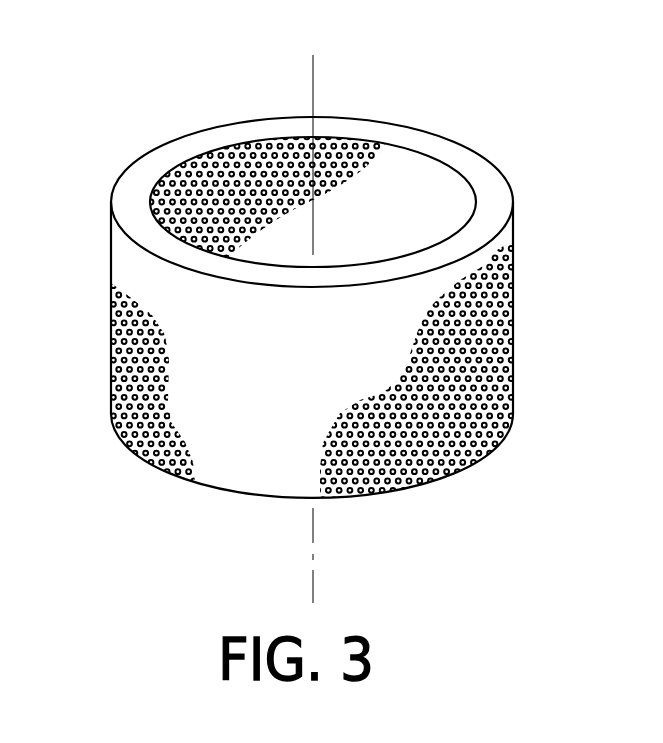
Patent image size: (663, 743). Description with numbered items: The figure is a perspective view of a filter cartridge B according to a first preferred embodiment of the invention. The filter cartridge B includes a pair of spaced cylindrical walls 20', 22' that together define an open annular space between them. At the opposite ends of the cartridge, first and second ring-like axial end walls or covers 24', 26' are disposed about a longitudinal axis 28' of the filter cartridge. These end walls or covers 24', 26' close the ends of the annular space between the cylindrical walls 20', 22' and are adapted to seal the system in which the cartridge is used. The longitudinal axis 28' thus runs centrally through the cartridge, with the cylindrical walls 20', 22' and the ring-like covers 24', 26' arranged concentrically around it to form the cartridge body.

The filter cartridge B is at (134, 128).
The cylindrical wall 20' is at (326, 164).
The cylindrical wall 22' is at (354, 365).
The first ring-like axial end wall 24' is at (340, 201).
The second ring-like axial end wall 26' is at (312, 370).
The longitudinal axis 28' is at (357, 329).